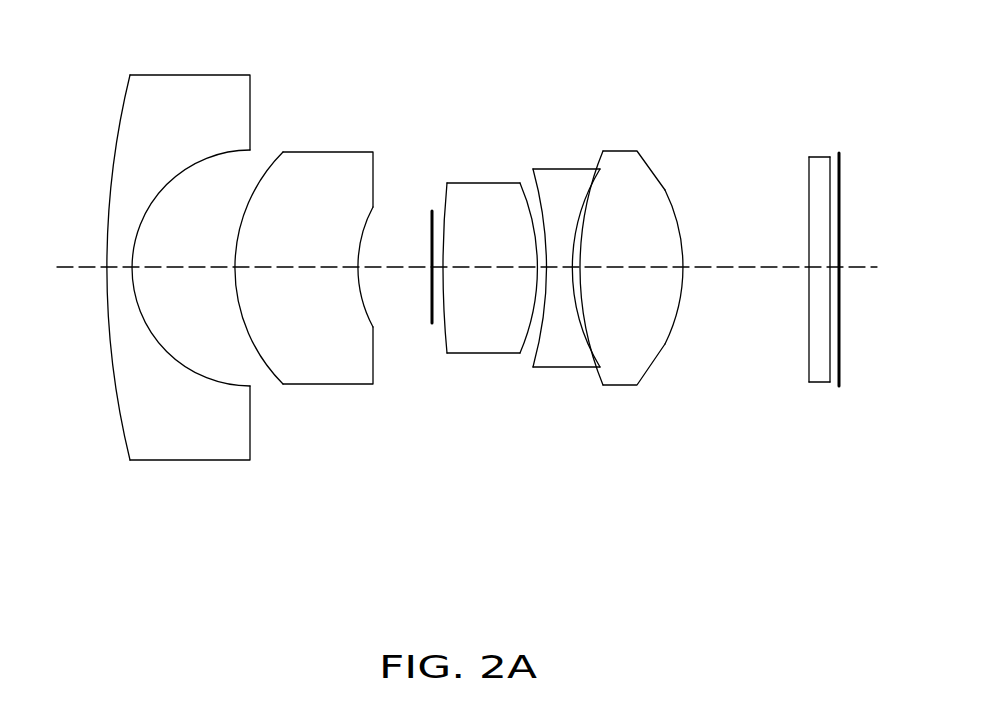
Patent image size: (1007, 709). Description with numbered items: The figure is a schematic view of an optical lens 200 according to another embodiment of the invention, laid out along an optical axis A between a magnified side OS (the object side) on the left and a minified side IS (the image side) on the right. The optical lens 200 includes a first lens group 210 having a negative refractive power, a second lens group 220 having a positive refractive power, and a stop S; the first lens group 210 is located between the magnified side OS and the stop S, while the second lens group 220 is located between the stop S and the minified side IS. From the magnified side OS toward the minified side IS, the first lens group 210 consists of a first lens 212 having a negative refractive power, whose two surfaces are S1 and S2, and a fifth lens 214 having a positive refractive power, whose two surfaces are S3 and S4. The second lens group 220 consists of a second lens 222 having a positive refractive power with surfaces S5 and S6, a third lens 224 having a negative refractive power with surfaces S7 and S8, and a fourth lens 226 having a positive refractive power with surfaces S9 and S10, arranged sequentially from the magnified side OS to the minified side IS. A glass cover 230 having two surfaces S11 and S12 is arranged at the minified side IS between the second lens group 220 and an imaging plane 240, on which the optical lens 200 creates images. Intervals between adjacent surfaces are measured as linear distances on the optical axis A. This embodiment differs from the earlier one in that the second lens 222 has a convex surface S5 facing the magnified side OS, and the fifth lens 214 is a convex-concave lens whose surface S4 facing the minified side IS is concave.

The optical lens 200 is at (829, 555).
The first lens group 210 is at (237, 309).
The first lens 212 is at (175, 282).
The fifth lens 214 is at (312, 296).
The second lens group 220 is at (549, 290).
The second lens 222 is at (476, 261).
The third lens 224 is at (560, 261).
The fourth lens 226 is at (631, 271).
The glass cover 230 is at (807, 272).
The imaging plane 240 is at (840, 360).
The stop S is at (428, 308).
The optical axis A is at (82, 268).
The magnified side OS is at (32, 268).
The minified side IS is at (889, 269).
The surface S1 is at (122, 127).
The surface S2 is at (237, 157).
The surface S3 is at (255, 188).
The surface S4 is at (372, 211).
The surface S5 is at (446, 197).
The surface S6 is at (521, 187).
The surface S7 is at (541, 221).
The surface S8 is at (583, 202).
The surface S9 is at (596, 167).
The surface S10 is at (668, 197).
The surface S11 is at (808, 186).
The surface S12 is at (837, 176).